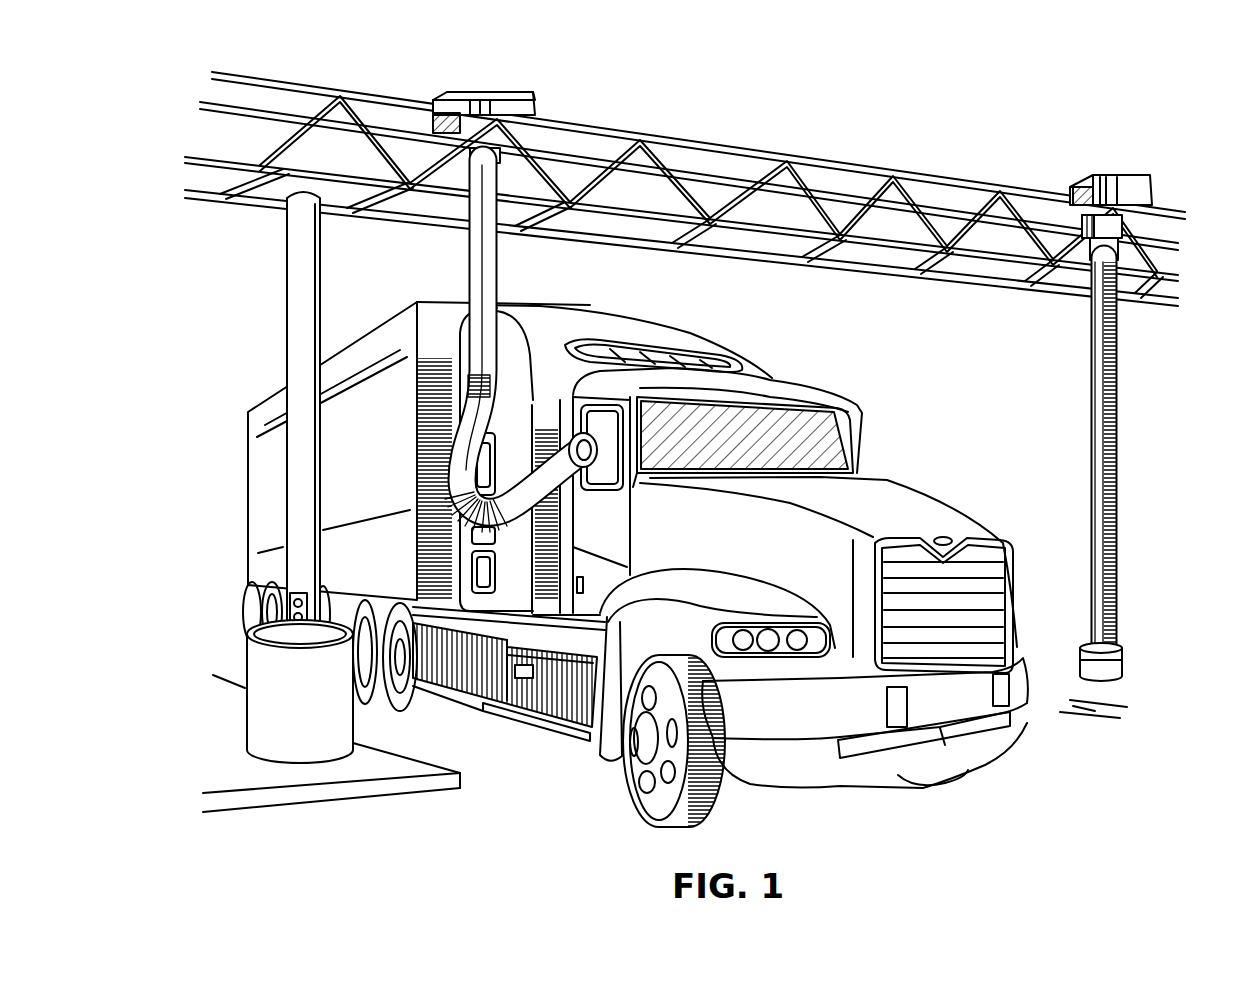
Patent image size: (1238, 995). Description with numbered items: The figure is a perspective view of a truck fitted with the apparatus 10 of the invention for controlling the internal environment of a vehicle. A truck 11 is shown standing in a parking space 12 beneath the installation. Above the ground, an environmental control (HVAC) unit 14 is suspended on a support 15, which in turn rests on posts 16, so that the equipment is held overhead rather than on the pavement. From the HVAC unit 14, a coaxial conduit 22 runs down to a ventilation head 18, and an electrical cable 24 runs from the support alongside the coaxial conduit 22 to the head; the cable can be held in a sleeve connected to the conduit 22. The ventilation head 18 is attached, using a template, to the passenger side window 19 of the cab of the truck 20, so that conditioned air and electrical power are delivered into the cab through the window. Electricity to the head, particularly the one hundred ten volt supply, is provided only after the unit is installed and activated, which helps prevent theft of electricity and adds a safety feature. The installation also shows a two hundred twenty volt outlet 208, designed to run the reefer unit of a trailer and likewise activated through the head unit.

The apparatus 10 is at (690, 408).
The truck 11 is at (611, 568).
The parking space 12 is at (905, 834).
The environmental control (HVAC) unit 14 is at (467, 88).
The support 15 is at (707, 134).
The posts 16 is at (318, 282).
The ventilation head 18 is at (570, 436).
The passenger side window 19 is at (590, 495).
The cab of a truck 20 is at (783, 381).
The coaxial conduit 22 is at (500, 297).
The electrical cable 24 is at (469, 374).
The 220 v. outlet 208 is at (282, 592).